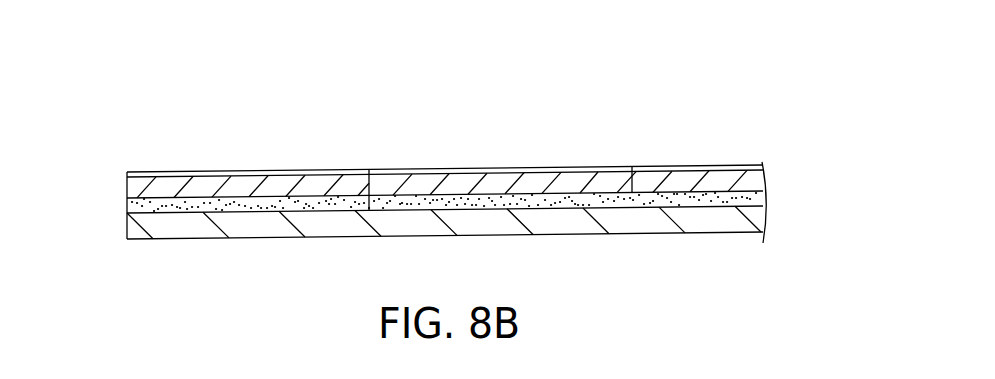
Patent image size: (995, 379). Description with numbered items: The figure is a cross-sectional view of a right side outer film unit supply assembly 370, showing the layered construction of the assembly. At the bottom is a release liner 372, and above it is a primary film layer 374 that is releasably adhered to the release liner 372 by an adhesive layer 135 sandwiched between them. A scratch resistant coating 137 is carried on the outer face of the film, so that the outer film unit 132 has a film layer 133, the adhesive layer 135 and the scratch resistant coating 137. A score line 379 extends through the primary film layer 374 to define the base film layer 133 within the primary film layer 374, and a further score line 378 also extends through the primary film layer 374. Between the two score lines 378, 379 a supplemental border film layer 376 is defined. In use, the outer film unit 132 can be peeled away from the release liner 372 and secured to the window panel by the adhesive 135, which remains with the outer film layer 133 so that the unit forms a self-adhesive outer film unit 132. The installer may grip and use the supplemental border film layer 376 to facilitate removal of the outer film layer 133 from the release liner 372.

The right side outer film unit supply assembly 370 is at (556, 104).
The release liner 372 is at (430, 232).
The adhesive layer 135 is at (764, 202).
The further score line 378 is at (366, 187).
The supplemental border film layer 376 is at (428, 182).
The film layer 133 is at (655, 168).
The scratch resistant coating 137 is at (680, 166).
The score line 379 is at (604, 168).
The outer film unit 132 is at (752, 158).
The primary film layer 374 is at (127, 182).